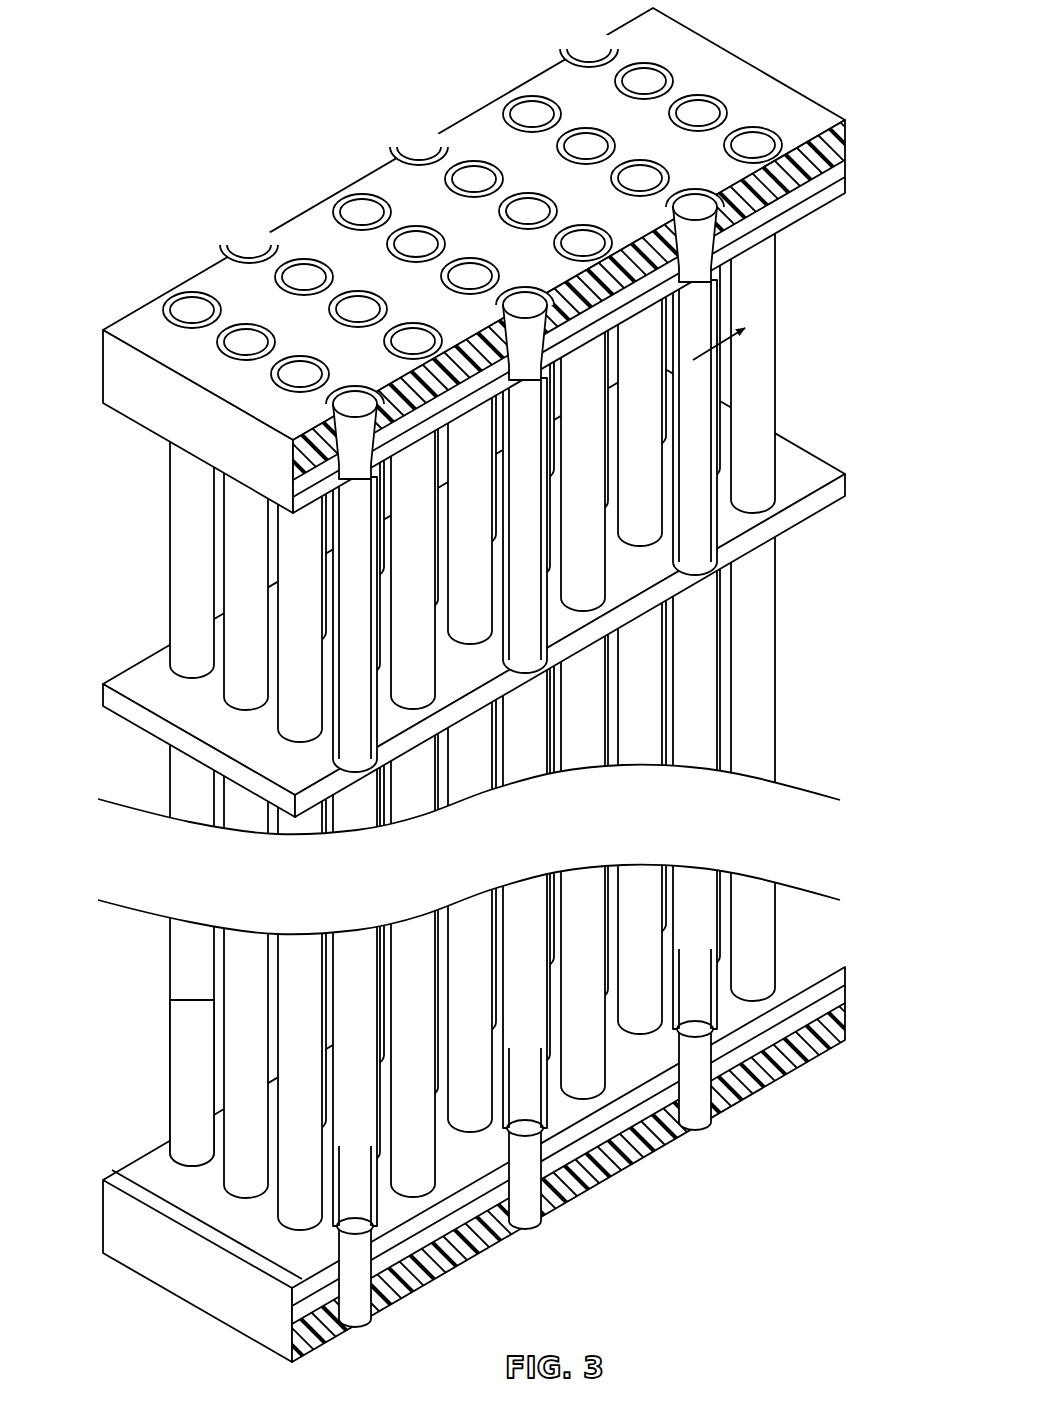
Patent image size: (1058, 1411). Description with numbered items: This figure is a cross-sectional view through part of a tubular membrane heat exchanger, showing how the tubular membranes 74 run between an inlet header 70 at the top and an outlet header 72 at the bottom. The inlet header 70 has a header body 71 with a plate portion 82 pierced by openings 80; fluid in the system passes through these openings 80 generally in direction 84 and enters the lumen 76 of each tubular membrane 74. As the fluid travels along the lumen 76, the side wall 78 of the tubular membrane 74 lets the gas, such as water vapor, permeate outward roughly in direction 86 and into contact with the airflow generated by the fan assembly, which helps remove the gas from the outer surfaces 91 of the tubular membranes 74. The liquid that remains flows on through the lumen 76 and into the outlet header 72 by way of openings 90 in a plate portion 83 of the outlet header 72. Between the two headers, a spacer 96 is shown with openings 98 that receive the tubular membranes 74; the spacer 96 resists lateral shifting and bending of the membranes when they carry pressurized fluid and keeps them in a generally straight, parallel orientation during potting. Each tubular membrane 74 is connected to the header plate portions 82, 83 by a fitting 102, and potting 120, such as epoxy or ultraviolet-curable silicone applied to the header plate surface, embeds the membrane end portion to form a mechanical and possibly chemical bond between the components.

The inlet header 70 is at (506, 263).
The header body 71 is at (479, 706).
The outlet header 72 is at (514, 1187).
The tubular membrane 74 is at (722, 520).
The lumen 76 is at (700, 470).
The side wall 78 is at (715, 420).
The openings 80 is at (690, 200).
The plate portion 82 is at (525, 160).
The plate portion 83 is at (775, 1075).
The direction 84 is at (745, 170).
The direction 86 is at (740, 335).
The openings 90 is at (700, 1105).
The outer surfaces 91 is at (190, 1050).
The spacers 96 is at (812, 520).
The openings 98 is at (477, 589).
The fitting 102 is at (692, 1148).
The potting 120 is at (565, 1155).